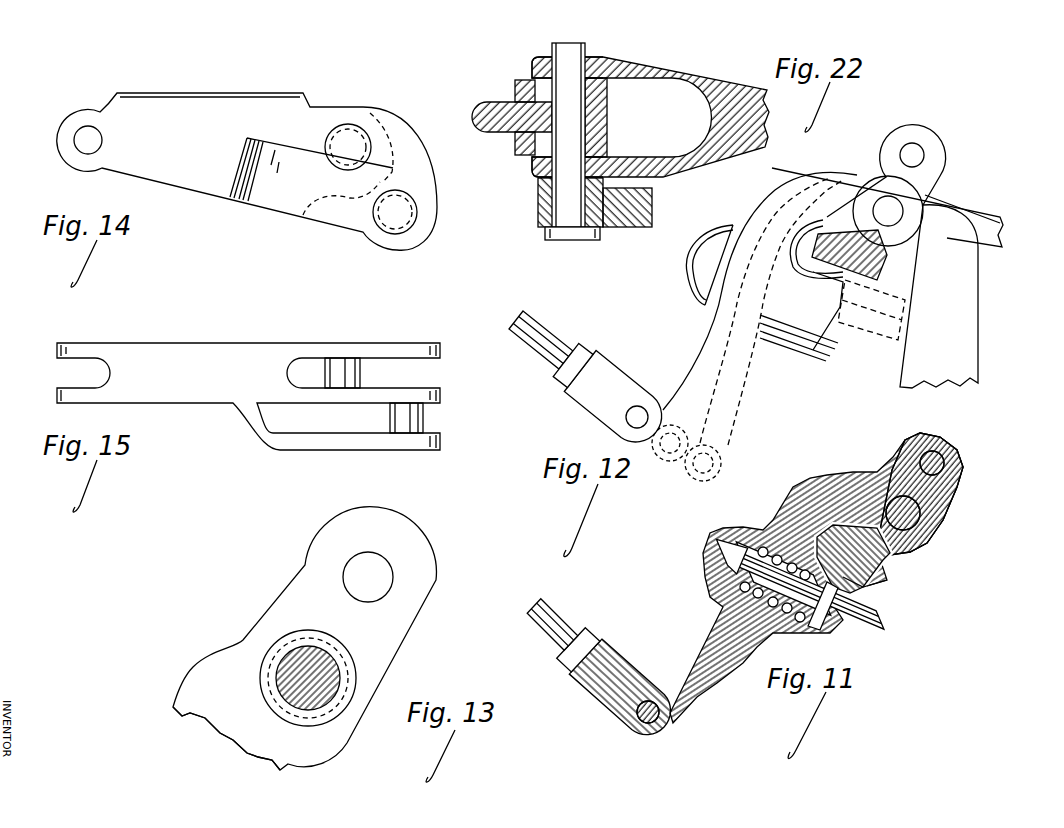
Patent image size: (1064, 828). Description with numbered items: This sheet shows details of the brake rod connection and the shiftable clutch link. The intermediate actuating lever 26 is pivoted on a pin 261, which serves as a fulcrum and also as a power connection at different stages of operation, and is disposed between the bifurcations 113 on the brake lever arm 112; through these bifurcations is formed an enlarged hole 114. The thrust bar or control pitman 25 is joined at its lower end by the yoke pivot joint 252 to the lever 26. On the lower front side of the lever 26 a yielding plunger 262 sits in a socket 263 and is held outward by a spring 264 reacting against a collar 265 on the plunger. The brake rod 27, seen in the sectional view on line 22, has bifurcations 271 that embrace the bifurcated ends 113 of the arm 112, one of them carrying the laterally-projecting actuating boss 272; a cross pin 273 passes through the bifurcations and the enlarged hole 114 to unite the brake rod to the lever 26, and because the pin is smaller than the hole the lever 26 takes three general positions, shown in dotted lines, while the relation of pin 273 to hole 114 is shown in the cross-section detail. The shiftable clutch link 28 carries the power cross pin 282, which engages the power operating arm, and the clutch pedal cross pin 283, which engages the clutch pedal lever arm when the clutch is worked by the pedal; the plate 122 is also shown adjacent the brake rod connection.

In FIG. 12, the section line 22 is at (779, 165).
In FIG. 12, the thrust bar or control pitman 25 is at (550, 347).
In FIG. 11, the thrust bar or control pitman 25 is at (550, 623).
In FIG. 22, the intermediate actuating lever 26 is at (473, 123).
In FIG. 12, the intermediate actuating lever 26 is at (763, 220).
In FIG. 11, the intermediate actuating lever 26 is at (827, 493).
In FIG. 22, the brake rod 27 is at (743, 95).
In FIG. 14, the shiftable clutch link 28 is at (220, 112).
In FIG. 15, the shiftable clutch link 28 is at (147, 358).
In FIG. 13, the brake lever arm 112 is at (283, 763).
In FIG. 12, the brake lever arm 112 is at (875, 260).
In FIG. 11, the brake lever arm 112 is at (897, 553).
In FIG. 13, the bifurcations 113 is at (407, 623).
In FIG. 22, the bifurcations 113 is at (603, 98).
In FIG. 12, the bifurcations 113 is at (927, 137).
In FIG. 11, the bifurcations 113 is at (963, 472).
In FIG. 13, the enlarged hole 114 is at (348, 662).
In FIG. 22, the enlarged hole 114 is at (540, 92).
In FIG. 22, the plate 122 is at (637, 220).
In FIG. 12, the plate 122 is at (970, 300).
In FIG. 12, the yoke pivot joint 252 is at (637, 412).
In FIG. 11, the yoke pivot joint 252 is at (647, 702).
In FIG. 13, the pin 261 is at (397, 575).
In FIG. 12, the pin 261 is at (918, 153).
In FIG. 11, the pin 261 is at (943, 453).
In FIG. 12, the yielding plunger 262 is at (837, 343).
In FIG. 11, the yielding plunger 262 is at (868, 625).
In FIG. 11, the socket 263 is at (857, 593).
In FIG. 11, the spring 264 is at (787, 612).
In FIG. 11, the collar 265 is at (830, 603).
In FIG. 22, the bifurcations 271 is at (530, 63).
In FIG. 12, the bifurcations 271 is at (960, 205).
In FIG. 22, the actuating boss 272 is at (540, 208).
In FIG. 12, the actuating boss 272 is at (912, 200).
In FIG. 13, the cross pin 273 is at (320, 710).
In FIG. 22, the cross pin 273 is at (570, 220).
In FIG. 12, the cross pin 273 is at (885, 200).
In FIG. 11, the cross pin 273 is at (940, 523).
In FIG. 14, the power cross pin 282 is at (352, 145).
In FIG. 15, the power cross pin 282 is at (340, 370).
In FIG. 14, the clutch pedal cross pin 283 is at (407, 220).
In FIG. 15, the clutch pedal cross pin 283 is at (405, 427).